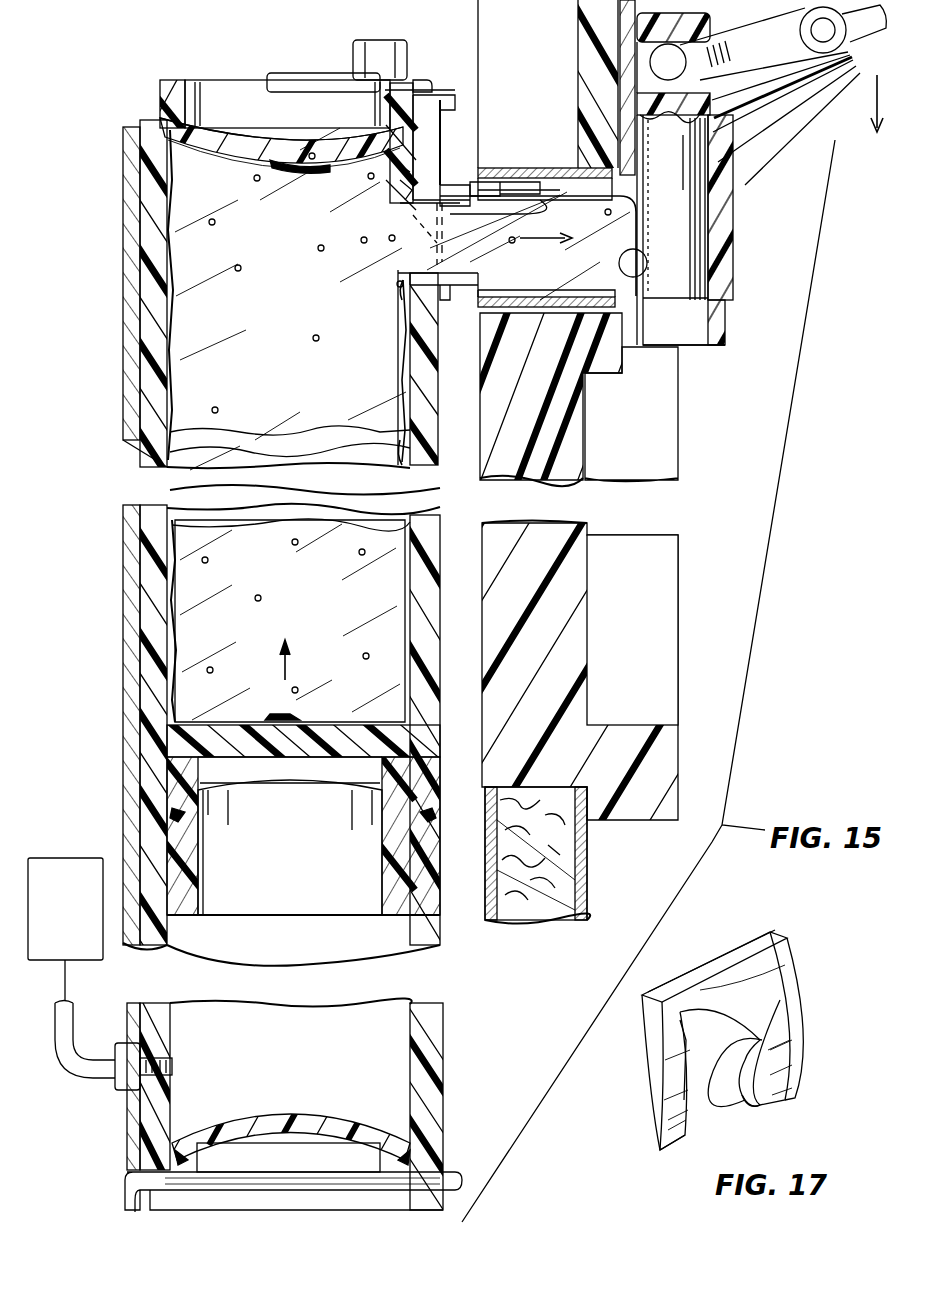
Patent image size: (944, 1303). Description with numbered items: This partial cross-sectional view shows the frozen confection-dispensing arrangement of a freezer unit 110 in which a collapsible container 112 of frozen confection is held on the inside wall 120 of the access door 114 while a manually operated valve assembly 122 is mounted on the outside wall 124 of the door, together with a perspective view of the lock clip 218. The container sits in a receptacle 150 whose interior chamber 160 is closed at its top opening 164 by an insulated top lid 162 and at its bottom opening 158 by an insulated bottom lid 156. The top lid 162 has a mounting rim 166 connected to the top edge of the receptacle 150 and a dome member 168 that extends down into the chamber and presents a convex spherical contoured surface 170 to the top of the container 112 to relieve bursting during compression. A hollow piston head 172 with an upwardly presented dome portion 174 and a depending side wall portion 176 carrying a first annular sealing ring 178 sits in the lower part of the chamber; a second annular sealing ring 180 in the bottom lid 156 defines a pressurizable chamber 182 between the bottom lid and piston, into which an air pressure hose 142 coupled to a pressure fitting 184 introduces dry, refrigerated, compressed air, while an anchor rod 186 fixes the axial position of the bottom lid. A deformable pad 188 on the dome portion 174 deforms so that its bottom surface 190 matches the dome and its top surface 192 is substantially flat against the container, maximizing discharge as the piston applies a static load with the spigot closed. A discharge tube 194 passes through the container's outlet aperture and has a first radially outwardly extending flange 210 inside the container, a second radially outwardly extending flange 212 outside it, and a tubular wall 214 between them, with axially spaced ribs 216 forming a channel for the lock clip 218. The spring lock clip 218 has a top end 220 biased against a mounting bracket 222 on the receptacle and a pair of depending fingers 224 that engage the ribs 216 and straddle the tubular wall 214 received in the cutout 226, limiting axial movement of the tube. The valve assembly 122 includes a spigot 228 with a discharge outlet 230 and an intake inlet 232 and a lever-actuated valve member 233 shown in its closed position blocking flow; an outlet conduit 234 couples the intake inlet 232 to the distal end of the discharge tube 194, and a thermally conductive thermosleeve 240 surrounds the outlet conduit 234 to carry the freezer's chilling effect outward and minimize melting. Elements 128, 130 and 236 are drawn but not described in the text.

In FIG. 15, the freezer unit 110 is at (615, 842).
In FIG. 15, the collapsible container 112 is at (176, 320).
In FIG. 15, the access door 114 is at (533, 937).
In FIG. 15, the inside wall 120 is at (485, 900).
In FIG. 15, the valve assembly 122 is at (758, 174).
In FIG. 15, the outside wall 124 is at (587, 863).
In FIG. 15, the liner 128 is at (178, 706).
In FIG. 15, the inner liner 130 is at (407, 432).
In FIG. 15, the air pressure hose 142 is at (80, 1062).
In FIG. 15, the receptacle 150 is at (108, 303).
In FIG. 15, the bottom lid 156 is at (383, 1080).
In FIG. 15, the bottom opening 158 is at (404, 1010).
In FIG. 15, the interior chamber 160 is at (183, 503).
In FIG. 15, the top lid 162 is at (243, 142).
In FIG. 15, the top opening 164 is at (237, 128).
In FIG. 15, the mounting rim 166 is at (170, 92).
In FIG. 15, the dome member 168 is at (323, 148).
In FIG. 15, the contoured surface 170 is at (333, 165).
In FIG. 15, the piston head 172 is at (267, 896).
In FIG. 15, the dome portion 174 is at (282, 760).
In FIG. 15, the side wall portion 176 is at (187, 868).
In FIG. 15, the first annular sealing ring 178 is at (203, 817).
In FIG. 15, the second annular sealing ring 180 is at (183, 1140).
In FIG. 15, the pressurizable chamber 182 is at (315, 1035).
In FIG. 15, the pressure fitting 184 is at (130, 1072).
In FIG. 15, the anchor rod 186 is at (325, 1180).
In FIG. 15, the deformable pad 188 is at (408, 738).
In FIG. 15, the bottom surface 190 is at (368, 758).
In FIG. 15, the top surface 192 is at (333, 720).
In FIG. 15, the discharge tube 194 is at (458, 316).
In FIG. 15, the first radially outwardly extending flange 210 is at (384, 183).
In FIG. 15, the second radially outwardly extending flange 212 is at (545, 177).
In FIG. 15, the tubular wall 214 is at (493, 205).
In FIG. 15, the ribs 216 is at (443, 200).
In FIG. 15, the lock clip 218 is at (452, 188).
In FIG. 17, the lock clip 218 is at (800, 1032).
In FIG. 15, the top end 220 is at (446, 112).
In FIG. 17, the top end 220 is at (712, 967).
In FIG. 15, the mounting bracket 222 is at (432, 80).
In FIG. 15, the depending fingers 224 is at (408, 192).
In FIG. 17, the depending fingers 224 is at (782, 1065).
In FIG. 17, the cutout 226 is at (748, 1088).
In FIG. 15, the spigot 228 is at (730, 248).
In FIG. 15, the discharge outlet 230 is at (700, 318).
In FIG. 15, the intake inlet 232 is at (653, 263).
In FIG. 15, the lever-actuated valve member 233 is at (697, 220).
In FIG. 15, the outlet conduit 234 is at (560, 296).
In FIG. 15, the lower clip 236 is at (398, 302).
In FIG. 15, the thermosleeve 240 is at (573, 170).